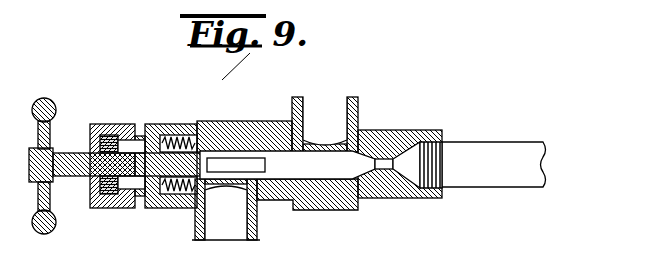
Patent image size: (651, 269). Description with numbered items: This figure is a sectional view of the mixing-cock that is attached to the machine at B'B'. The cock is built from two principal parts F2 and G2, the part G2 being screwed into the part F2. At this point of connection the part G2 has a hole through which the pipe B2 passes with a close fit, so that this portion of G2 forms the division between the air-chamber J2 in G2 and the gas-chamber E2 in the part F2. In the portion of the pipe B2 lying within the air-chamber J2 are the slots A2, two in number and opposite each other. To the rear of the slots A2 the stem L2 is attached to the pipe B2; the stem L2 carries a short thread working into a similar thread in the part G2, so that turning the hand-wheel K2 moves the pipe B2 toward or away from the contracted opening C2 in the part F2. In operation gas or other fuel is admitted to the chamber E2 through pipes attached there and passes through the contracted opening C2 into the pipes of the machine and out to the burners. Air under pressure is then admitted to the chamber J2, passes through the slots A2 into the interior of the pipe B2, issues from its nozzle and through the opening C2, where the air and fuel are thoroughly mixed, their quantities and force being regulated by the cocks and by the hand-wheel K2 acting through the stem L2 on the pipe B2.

The hand-wheel K2 is at (51, 160).
The stem L2 is at (100, 162).
The part of mixing-cock G2 is at (244, 125).
The gas-chamber E2 is at (325, 124).
The slots A2 is at (236, 165).
The pipe B2 is at (287, 165).
The air-chamber J2 is at (226, 209).
The part of mixing-cock F2 is at (307, 207).
The contracted opening C2 is at (388, 167).
The point of attachment B'B' is at (514, 164).